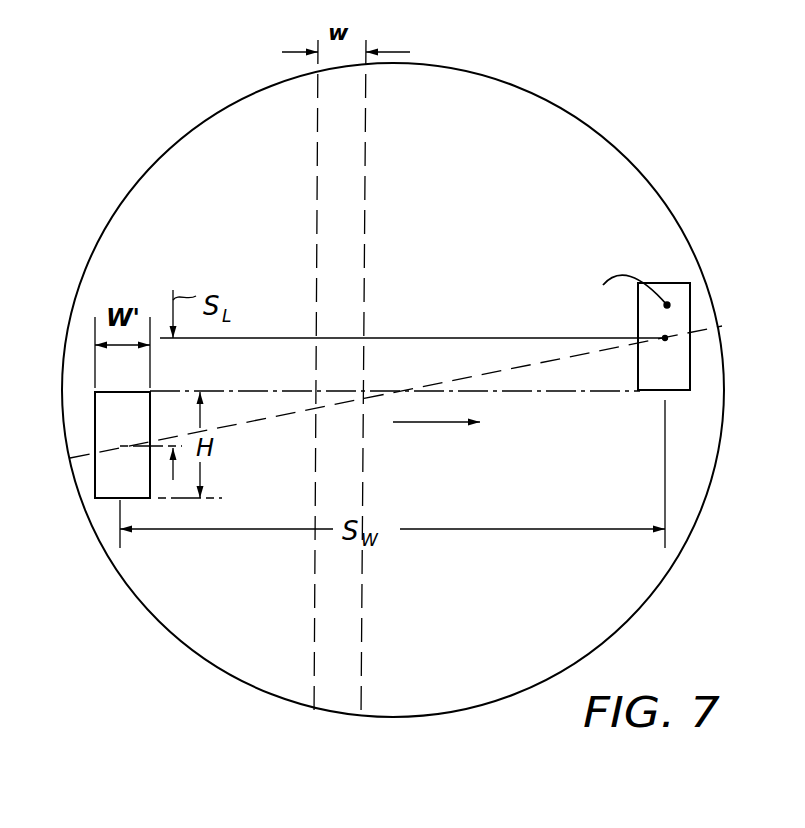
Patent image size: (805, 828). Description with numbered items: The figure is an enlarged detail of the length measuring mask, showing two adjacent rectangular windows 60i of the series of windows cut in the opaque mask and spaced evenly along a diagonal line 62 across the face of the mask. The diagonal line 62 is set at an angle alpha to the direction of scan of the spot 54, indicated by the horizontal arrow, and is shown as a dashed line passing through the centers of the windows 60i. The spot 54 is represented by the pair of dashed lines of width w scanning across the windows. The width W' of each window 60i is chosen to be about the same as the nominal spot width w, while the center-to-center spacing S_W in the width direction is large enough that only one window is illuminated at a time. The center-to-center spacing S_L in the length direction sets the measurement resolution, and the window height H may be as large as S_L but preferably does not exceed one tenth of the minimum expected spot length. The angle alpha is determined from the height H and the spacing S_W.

The spot 54 is at (366, 176).
The diagonal line 62 is at (490, 368).
The window 60i is at (110, 478).